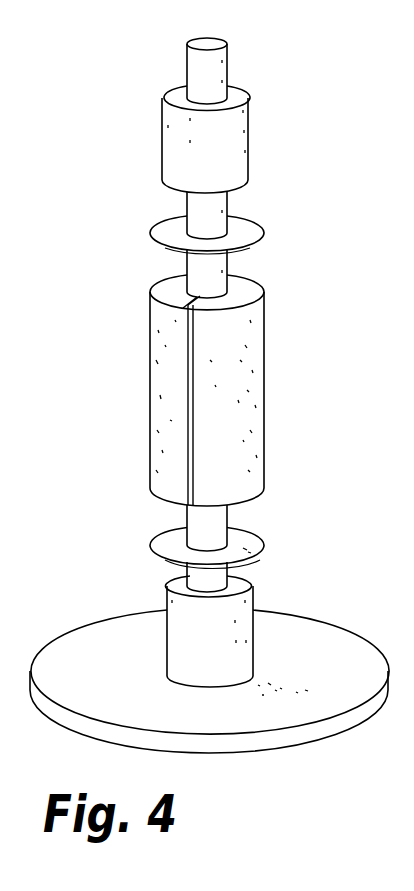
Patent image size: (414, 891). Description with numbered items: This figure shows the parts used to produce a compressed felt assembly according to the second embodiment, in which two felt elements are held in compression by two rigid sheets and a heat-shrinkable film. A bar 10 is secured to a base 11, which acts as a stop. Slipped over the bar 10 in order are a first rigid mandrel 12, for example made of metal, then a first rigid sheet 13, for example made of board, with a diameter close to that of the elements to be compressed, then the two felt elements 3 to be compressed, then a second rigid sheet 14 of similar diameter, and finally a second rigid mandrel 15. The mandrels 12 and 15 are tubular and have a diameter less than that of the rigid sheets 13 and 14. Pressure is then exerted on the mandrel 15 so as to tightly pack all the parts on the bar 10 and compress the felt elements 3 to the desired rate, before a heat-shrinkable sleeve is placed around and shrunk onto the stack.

The bar 10 is at (200, 70).
The second rigid mandrel 15 is at (243, 142).
The second rigid sheet 14 is at (241, 232).
The elements to be compressed 3 is at (268, 387).
The first rigid sheet 13 is at (254, 540).
The first rigid mandrel 12 is at (245, 630).
The base 11 is at (331, 640).